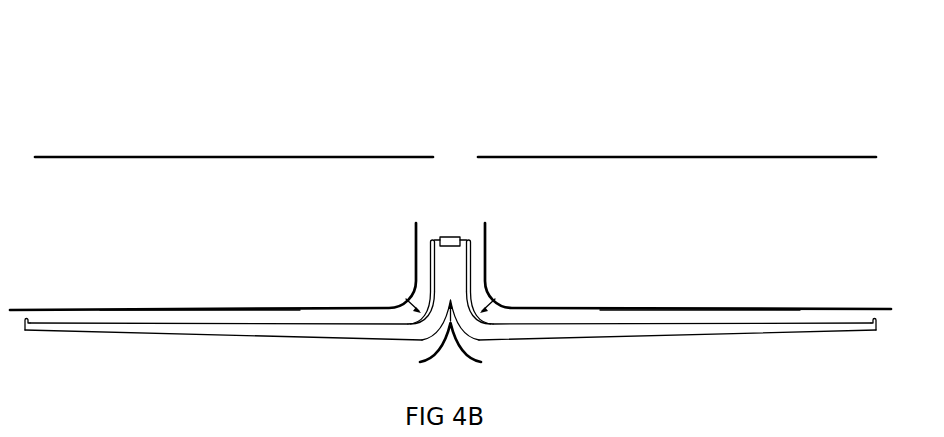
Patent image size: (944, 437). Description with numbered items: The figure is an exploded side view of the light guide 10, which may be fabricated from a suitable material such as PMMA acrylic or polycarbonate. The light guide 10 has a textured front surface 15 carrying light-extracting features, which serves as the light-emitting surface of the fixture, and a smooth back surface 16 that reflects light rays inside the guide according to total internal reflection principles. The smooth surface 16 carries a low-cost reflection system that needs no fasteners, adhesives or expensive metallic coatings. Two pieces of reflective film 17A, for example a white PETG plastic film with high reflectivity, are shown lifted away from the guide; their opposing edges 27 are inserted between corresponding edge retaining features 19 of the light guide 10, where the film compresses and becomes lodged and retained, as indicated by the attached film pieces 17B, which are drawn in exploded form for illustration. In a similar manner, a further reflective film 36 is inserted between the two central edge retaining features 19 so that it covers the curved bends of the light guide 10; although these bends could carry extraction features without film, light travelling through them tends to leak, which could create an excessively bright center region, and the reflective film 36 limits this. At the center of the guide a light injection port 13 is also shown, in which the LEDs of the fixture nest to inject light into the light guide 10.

The light guide 10 is at (450, 285).
The light injection port 13 is at (442, 238).
The front surface 15 is at (222, 335).
The smooth surface 16 is at (177, 323).
The reflective film piece 17A is at (235, 157).
The attached film piece 17B is at (328, 309).
The edge retaining feature 19 is at (430, 244).
The opposing edge 27 is at (35, 157).
The reflective film 36 is at (467, 355).